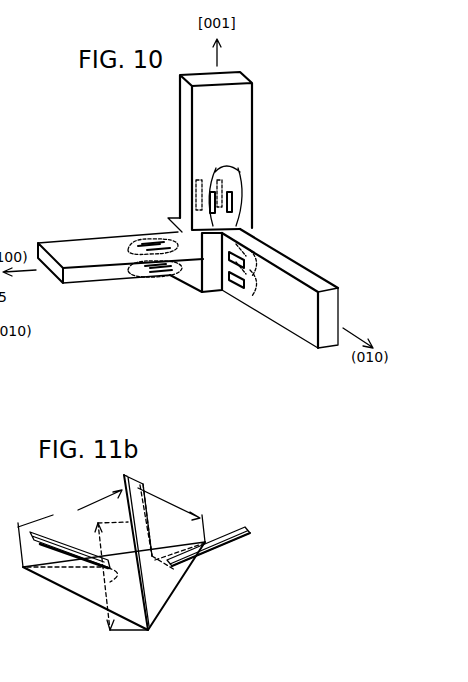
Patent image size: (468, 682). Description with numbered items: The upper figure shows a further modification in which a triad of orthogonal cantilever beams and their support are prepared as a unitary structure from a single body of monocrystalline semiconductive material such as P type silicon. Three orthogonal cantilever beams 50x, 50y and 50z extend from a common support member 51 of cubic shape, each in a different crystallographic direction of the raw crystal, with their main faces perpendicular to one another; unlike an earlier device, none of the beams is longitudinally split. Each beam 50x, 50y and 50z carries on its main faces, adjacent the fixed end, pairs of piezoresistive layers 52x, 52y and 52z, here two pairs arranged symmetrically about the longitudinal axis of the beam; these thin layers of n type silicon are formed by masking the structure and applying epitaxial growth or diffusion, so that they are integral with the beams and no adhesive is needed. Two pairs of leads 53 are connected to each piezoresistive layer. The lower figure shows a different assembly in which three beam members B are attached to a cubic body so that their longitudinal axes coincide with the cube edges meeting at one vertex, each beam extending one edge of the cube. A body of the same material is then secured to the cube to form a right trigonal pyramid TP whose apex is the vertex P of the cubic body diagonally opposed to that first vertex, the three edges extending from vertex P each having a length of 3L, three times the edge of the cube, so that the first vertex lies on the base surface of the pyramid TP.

In FIG. 10, the cantilever beam 50x is at (102, 230).
In FIG. 10, the cantilever beam 50y is at (300, 365).
In FIG. 10, the cantilever beam 50z is at (300, 120).
In FIG. 10, the common support member 51 is at (198, 286).
In FIG. 10, the piezoresistive layers 52x is at (158, 250).
In FIG. 10, the piezoresistive layers 52y is at (246, 258).
In FIG. 10, the piezoresistive layers 52z is at (194, 194).
In FIG. 10, the leads 53 is at (118, 288).
In FIG. 11B, the beam members B is at (138, 486).
In FIG. 11B, the edge length of pyramid 3L is at (111, 559).
In FIG. 11B, the vertex P is at (140, 522).
In FIG. 11B, the right trigonal pyramid TP is at (176, 584).